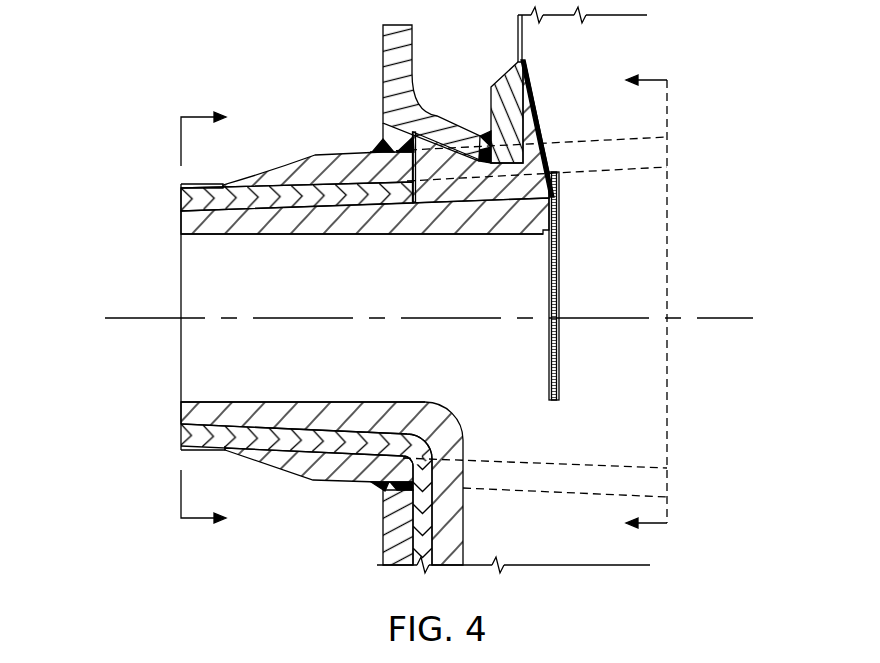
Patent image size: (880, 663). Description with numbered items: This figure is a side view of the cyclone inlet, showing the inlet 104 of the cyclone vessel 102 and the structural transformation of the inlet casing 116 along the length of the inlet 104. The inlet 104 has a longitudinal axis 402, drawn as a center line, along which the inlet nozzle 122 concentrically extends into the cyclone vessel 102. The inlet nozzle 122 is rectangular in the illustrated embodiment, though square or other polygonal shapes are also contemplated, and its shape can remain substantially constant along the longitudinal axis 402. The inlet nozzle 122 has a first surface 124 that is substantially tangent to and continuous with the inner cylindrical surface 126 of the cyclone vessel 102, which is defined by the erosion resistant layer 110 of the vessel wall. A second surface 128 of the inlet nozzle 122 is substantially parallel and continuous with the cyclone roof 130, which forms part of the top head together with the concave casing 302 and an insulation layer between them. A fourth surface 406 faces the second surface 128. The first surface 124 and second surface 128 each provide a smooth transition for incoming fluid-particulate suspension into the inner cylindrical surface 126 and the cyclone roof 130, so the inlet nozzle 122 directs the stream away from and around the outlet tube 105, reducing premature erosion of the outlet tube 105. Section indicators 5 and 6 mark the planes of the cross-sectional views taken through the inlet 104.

The inlet 104 is at (102, 206).
The inlet casing 116 is at (283, 165).
The second surface 128 is at (347, 235).
The cyclone roof 130 is at (494, 223).
The first surface 124 is at (247, 291).
The inlet nozzle 122 is at (197, 368).
The fourth surface 406 is at (347, 401).
The concave casing 302 is at (452, 121).
The outlet tube 105 is at (560, 346).
The inner cylindrical surface 126 is at (572, 443).
The erosion resistant layer 110 is at (452, 525).
The cyclone vessel 102 is at (383, 553).
The longitudinal axis 402 is at (737, 316).
The section line 5- 5 is at (212, 318).
The section line 6- 6 is at (636, 302).